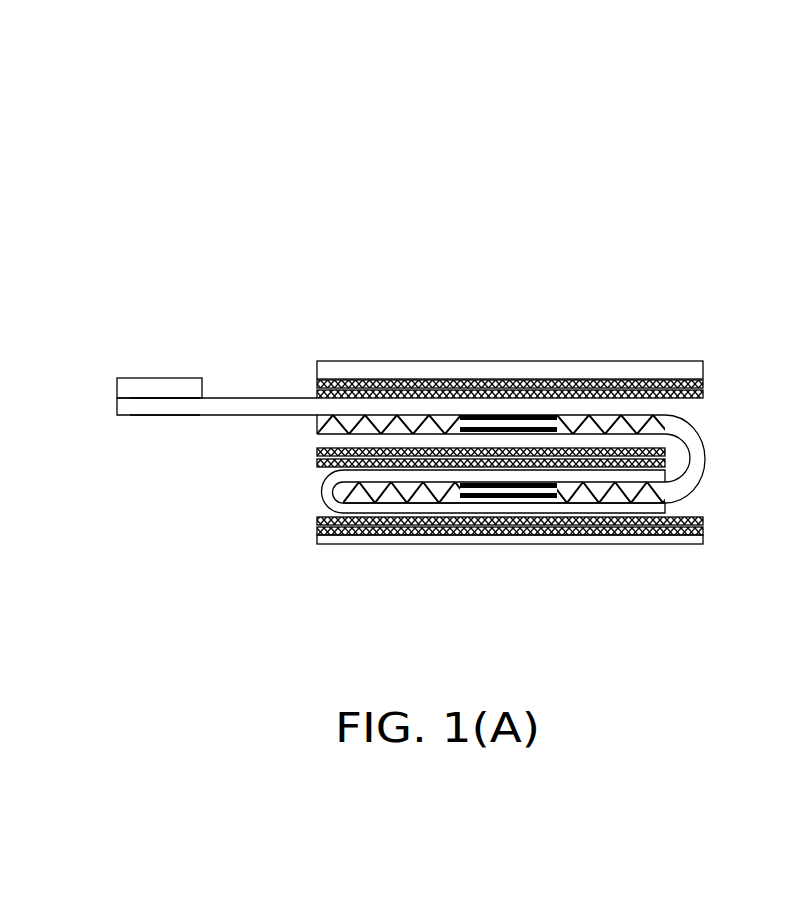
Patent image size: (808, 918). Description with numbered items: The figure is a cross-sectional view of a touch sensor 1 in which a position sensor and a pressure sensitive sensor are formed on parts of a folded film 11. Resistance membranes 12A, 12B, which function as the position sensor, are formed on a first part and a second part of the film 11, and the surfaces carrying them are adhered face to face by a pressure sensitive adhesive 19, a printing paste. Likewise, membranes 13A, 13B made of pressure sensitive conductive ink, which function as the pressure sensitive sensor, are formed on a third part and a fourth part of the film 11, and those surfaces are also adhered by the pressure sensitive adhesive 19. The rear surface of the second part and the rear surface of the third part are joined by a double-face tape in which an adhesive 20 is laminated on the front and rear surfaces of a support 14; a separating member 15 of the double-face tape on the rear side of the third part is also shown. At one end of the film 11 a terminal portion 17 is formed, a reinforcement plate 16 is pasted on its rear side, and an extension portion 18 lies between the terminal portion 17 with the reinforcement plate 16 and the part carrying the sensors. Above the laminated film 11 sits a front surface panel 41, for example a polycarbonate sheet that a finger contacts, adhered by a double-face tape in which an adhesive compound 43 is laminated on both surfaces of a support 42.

The touch sensor 1 is at (484, 335).
The film 11 is at (525, 508).
The resistance membrane 12A is at (508, 417).
The resistance membrane 12B is at (530, 430).
The membrane 13A is at (538, 483).
The membrane 13B is at (548, 497).
The support 14 is at (615, 470).
The separating member 15 is at (433, 537).
The reinforcement plate 16 is at (160, 385).
The terminal portion 17 is at (155, 415).
The extension portion 18 is at (247, 415).
The pressure sensitive adhesive 19 is at (317, 422).
The adhesive 20 is at (317, 452).
The front surface panel 41 is at (425, 364).
The support 42 is at (388, 380).
The adhesive compound 43 is at (317, 395).